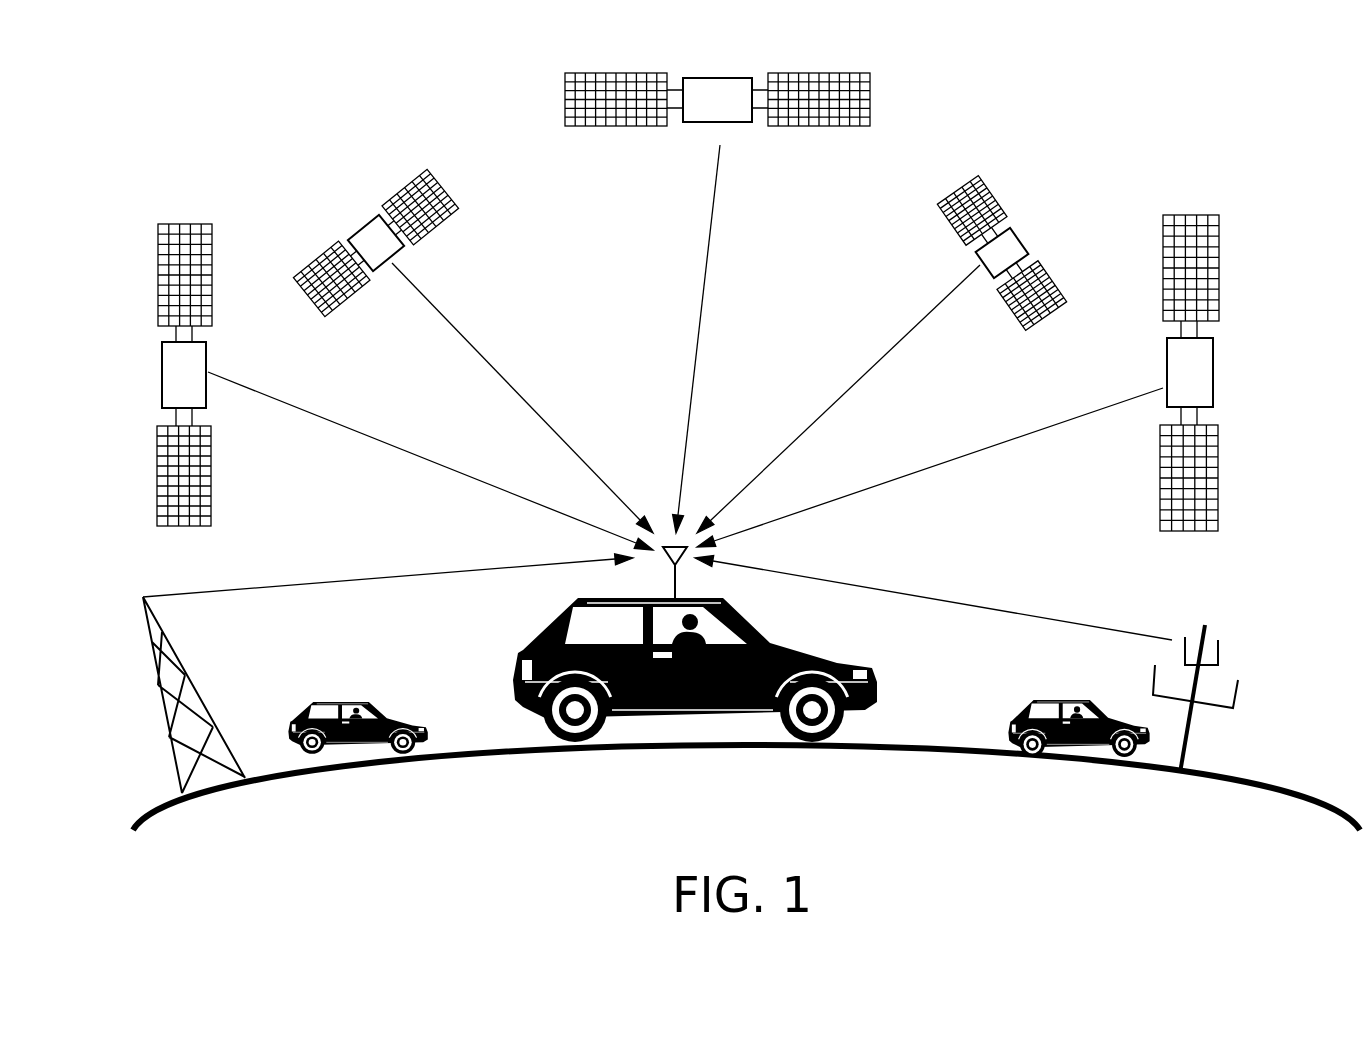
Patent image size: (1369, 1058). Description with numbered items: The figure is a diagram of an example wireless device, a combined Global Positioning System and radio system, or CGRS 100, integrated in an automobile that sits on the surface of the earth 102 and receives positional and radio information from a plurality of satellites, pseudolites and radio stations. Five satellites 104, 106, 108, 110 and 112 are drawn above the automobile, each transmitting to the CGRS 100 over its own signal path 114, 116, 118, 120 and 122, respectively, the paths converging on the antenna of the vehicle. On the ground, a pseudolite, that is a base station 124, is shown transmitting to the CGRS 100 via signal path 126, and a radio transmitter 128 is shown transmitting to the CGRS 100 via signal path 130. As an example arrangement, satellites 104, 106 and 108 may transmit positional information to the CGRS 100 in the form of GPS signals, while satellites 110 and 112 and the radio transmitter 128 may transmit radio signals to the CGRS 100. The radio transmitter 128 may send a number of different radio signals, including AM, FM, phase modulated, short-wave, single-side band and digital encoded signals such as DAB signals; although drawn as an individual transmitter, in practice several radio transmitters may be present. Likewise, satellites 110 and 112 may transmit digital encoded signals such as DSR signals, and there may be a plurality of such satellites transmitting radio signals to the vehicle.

The combined GPS and radio system 100 is at (622, 598).
The surface of the earth 102 is at (575, 752).
The satellite 104 is at (1210, 378).
The satellite 106 is at (697, 83).
The satellite 108 is at (163, 355).
The satellite 110 is at (372, 224).
The satellite 112 is at (1017, 232).
The signal path 114 is at (902, 475).
The signal path 116 is at (708, 247).
The signal path 118 is at (300, 380).
The signal path 120 is at (439, 312).
The signal path 122 is at (777, 457).
The pseudolite 124 is at (1205, 682).
The signal path 126 is at (905, 592).
The radio transmitter 128 is at (158, 685).
The signal path 130 is at (295, 585).